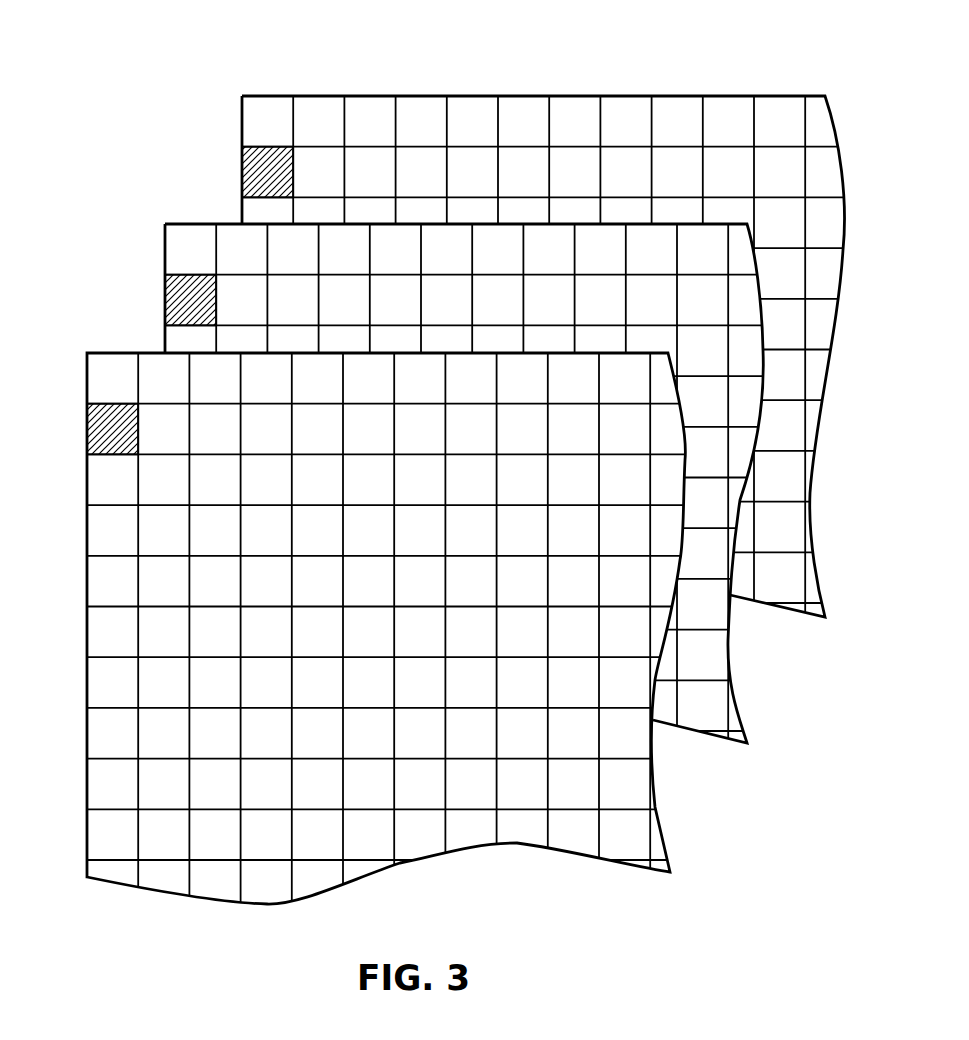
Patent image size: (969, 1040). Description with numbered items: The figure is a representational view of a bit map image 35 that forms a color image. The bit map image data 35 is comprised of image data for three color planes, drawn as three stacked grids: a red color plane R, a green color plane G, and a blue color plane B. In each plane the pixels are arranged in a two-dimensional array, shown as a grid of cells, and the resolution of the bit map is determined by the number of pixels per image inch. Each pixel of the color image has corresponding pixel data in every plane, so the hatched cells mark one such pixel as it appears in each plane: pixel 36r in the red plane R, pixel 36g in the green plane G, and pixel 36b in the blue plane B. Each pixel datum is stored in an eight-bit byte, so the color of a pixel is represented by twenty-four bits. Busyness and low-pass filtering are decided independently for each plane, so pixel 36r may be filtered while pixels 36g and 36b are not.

The bit map image 35 is at (454, 478).
The pixel in blue color plane 36b is at (242, 170).
The pixel in green color plane 36g is at (165, 300).
The pixel in red color plane 36r is at (87, 426).
The blue color plane B is at (825, 617).
The green color plane G is at (747, 743).
The red color plane R is at (670, 872).